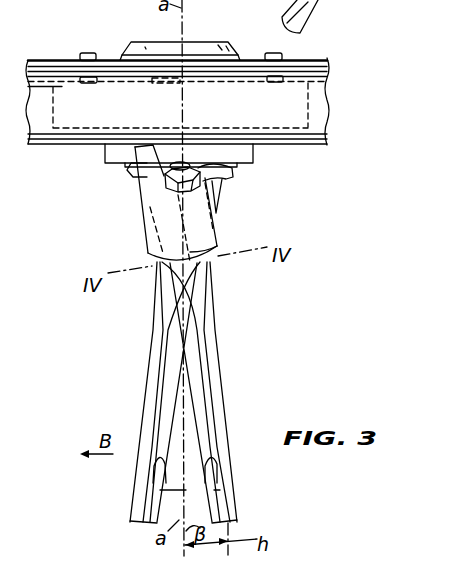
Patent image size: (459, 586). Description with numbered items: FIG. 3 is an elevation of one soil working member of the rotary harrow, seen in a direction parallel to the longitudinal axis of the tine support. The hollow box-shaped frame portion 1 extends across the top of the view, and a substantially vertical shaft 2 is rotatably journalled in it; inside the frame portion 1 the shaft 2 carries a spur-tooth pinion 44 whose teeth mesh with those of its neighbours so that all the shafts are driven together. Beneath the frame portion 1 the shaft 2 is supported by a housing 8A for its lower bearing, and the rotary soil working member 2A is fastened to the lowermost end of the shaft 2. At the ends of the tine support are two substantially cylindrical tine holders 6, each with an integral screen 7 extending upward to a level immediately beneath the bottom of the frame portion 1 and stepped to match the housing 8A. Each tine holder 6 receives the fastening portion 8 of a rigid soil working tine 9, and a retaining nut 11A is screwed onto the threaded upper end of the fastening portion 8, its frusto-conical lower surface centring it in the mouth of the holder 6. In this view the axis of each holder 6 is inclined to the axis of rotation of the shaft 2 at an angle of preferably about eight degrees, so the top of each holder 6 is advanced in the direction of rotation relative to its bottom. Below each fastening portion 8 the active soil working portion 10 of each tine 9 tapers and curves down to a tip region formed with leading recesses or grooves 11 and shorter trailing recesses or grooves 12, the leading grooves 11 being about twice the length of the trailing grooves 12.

The hollow box-shaped frame portion 1 is at (316, 143).
The shaft 2 is at (193, 87).
The rotary soil working member 2A is at (128, 371).
The spur-tooth pinion 44 is at (312, 116).
The tine holder 6 is at (150, 247).
The screen 7 is at (131, 174).
The fastening portion 8 is at (184, 164).
The housing for the lower bearing 8A is at (105, 153).
The soil working tine 9 is at (226, 341).
The active or soil working portion 10 is at (222, 388).
The leading recess or groove 11 is at (190, 490).
The retaining nut 11A is at (233, 173).
The trailing recess or groove 12 is at (318, 9).